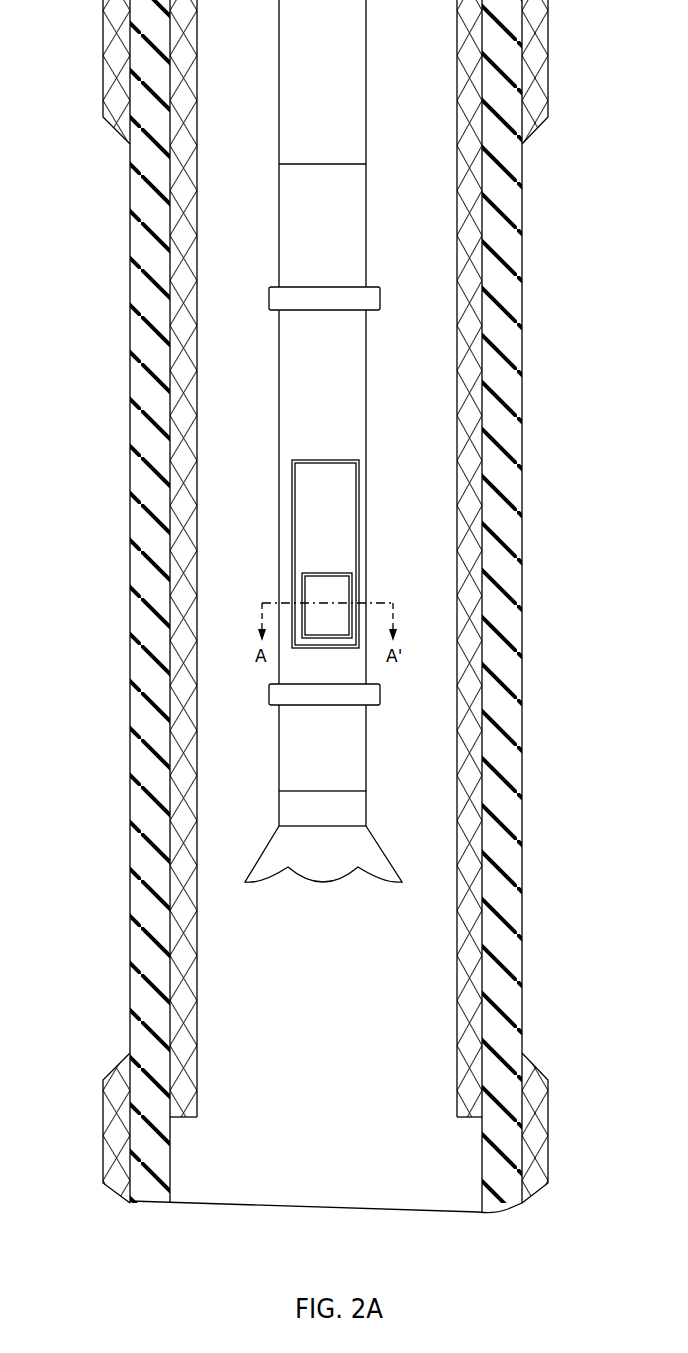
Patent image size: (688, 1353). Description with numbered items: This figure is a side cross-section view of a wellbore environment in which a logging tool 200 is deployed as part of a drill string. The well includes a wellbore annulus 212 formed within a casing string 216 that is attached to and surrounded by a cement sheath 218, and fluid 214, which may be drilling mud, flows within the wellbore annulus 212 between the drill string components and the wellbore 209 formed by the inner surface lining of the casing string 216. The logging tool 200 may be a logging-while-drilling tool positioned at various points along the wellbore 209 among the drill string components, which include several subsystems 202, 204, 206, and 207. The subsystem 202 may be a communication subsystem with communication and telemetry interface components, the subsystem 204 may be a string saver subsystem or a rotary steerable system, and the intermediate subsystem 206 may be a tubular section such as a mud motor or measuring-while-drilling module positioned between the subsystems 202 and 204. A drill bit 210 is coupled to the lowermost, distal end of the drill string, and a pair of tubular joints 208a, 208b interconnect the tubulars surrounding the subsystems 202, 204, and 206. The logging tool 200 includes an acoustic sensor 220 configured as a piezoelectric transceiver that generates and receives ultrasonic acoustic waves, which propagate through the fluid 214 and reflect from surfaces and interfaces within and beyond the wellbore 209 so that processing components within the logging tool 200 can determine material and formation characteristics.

The logging tool 200 is at (362, 554).
The subsystem 202 is at (329, 190).
The subsystem 204 is at (328, 758).
The intermediate subsystem 206 is at (330, 423).
The subsystem 207 is at (340, 810).
The tubular joint 208a is at (272, 313).
The tubular joint 208b is at (267, 693).
The wellbore 209 is at (457, 250).
The drill bit 210 is at (347, 873).
The wellbore annulus 212 is at (223, 157).
The fluid 214 is at (430, 1010).
The casing string 216 is at (187, 463).
The cement sheath 218 is at (160, 533).
The acoustic sensor 220 is at (322, 567).